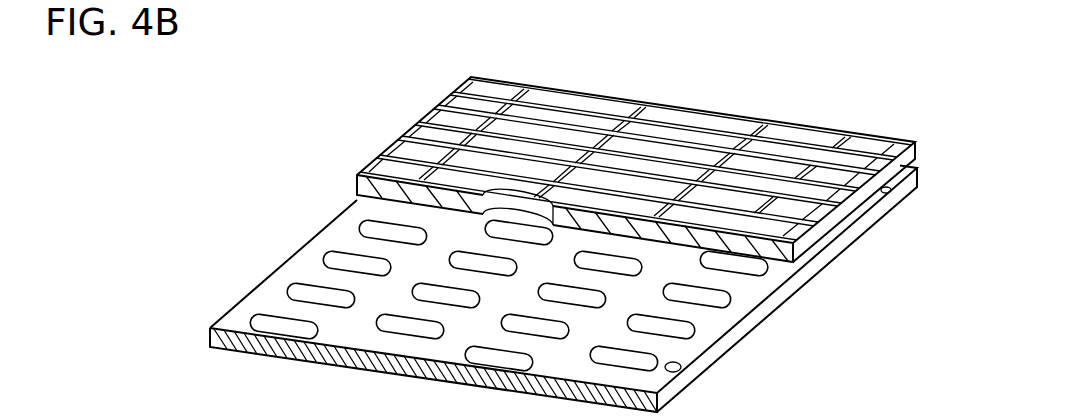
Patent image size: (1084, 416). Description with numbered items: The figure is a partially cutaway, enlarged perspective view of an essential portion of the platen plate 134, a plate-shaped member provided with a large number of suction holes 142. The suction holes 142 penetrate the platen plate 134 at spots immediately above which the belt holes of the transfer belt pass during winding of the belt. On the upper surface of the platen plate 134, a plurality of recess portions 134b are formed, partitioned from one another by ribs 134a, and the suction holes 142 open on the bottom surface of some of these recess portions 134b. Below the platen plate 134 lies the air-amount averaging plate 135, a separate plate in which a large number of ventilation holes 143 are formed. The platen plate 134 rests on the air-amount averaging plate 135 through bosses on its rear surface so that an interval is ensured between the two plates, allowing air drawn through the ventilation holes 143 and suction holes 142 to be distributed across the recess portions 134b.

The platen plate 134 is at (406, 117).
The rib 134a is at (541, 207).
The recess portion 134b is at (416, 175).
The air-amount averaging plate 135 is at (230, 299).
The suction hole 142 is at (558, 206).
The ventilation hole 143 is at (281, 327).